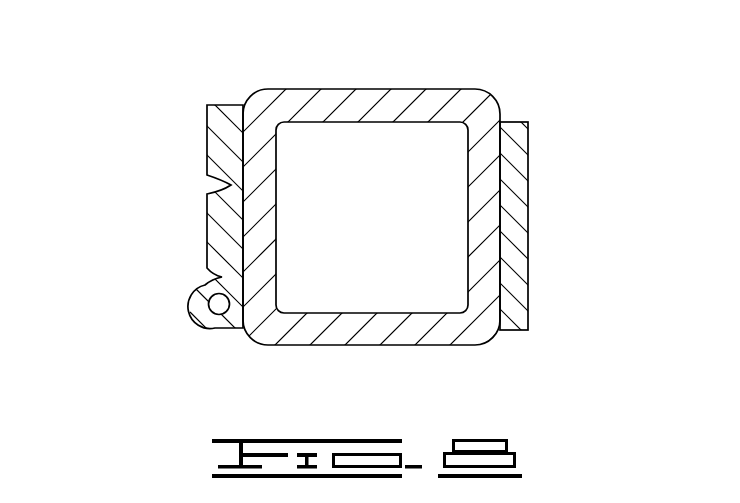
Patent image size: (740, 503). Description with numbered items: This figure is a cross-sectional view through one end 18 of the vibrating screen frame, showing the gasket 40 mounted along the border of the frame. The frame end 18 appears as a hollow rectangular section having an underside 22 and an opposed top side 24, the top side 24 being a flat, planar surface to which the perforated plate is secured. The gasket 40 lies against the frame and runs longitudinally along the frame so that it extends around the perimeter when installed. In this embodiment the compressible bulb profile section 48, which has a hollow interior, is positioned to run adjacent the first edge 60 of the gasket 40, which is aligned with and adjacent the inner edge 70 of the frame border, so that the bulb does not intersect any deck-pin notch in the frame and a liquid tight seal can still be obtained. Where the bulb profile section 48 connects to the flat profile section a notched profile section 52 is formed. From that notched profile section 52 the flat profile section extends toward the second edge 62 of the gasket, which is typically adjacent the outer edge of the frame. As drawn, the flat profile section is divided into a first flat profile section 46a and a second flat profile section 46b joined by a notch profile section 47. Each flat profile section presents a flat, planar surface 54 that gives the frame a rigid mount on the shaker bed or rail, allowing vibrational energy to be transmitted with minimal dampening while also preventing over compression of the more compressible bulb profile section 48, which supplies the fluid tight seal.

The end 18 is at (428, 89).
The underside 22 is at (262, 225).
The top side 24 is at (488, 183).
The gasket 40 is at (207, 212).
The first flat profile section 46a is at (207, 140).
The second flat profile section 46b is at (207, 246).
The notch profile section 47 is at (229, 185).
The bulb profile section 48 is at (195, 311).
The notched profile section 52 is at (207, 270).
The flat, planar surface 54 is at (207, 108).
The first edge 60 is at (215, 328).
The second edge 62 is at (226, 105).
The inner edge 70 is at (440, 345).